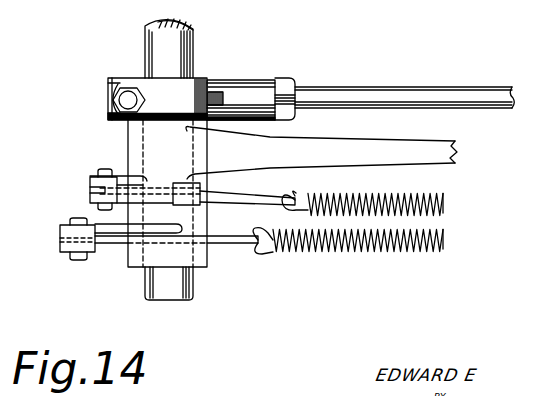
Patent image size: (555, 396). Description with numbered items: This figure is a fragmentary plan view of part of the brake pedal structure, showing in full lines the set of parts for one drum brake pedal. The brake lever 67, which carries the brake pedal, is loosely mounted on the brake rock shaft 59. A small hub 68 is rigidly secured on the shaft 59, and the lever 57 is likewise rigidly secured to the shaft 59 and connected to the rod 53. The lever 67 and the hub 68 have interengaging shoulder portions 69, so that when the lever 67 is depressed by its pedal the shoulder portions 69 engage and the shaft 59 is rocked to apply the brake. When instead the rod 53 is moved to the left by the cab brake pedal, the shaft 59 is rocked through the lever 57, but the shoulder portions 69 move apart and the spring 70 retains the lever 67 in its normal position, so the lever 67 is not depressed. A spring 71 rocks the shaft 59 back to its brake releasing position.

The rod 53 is at (386, 85).
The lever 57 is at (171, 87).
The brake rock shaft 59 is at (194, 291).
The brake lever 67 is at (440, 155).
The hub 68 is at (172, 257).
The interengaging shoulder portions 69 is at (156, 191).
The spring 70 is at (447, 202).
The spring 71 is at (447, 246).